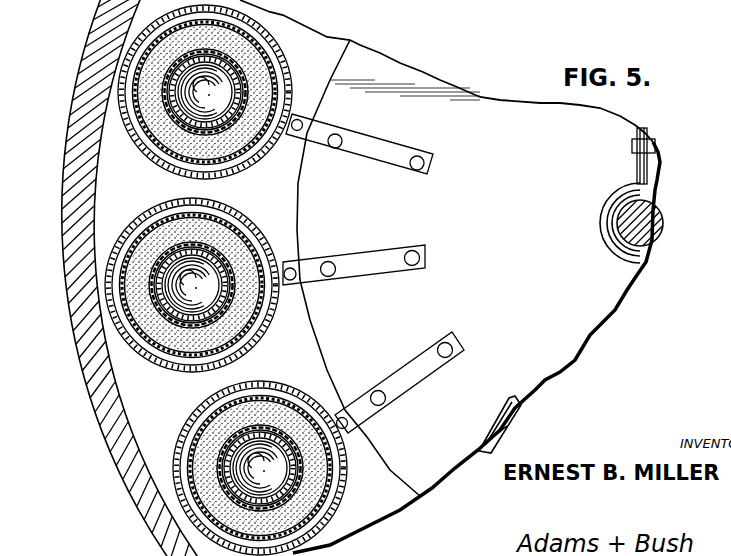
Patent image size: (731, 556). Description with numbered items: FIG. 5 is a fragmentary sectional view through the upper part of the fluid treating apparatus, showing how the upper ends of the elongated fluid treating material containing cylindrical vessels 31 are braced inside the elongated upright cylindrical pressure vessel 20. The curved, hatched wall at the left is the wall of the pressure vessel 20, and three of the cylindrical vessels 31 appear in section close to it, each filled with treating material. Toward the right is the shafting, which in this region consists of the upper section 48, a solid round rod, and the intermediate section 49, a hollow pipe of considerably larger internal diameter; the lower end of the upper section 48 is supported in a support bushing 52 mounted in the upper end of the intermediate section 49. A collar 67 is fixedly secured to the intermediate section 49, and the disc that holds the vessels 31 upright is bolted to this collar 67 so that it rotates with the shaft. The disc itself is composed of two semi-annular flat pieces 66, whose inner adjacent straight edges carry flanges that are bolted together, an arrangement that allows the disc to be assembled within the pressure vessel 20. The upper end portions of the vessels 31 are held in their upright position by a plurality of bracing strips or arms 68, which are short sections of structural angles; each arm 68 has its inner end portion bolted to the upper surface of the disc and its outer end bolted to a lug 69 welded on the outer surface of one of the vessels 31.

The pressure vessel 20 is at (72, 337).
The fluid treating material containing cylindrical vessel 31 is at (289, 66).
The upper section 48 is at (650, 242).
The intermediate section 49 is at (655, 184).
The support bushing 52 is at (650, 192).
The semi-annular flat piece 66 is at (522, 158).
The collar 67 is at (608, 204).
The bracing strip or arm 68 is at (386, 143).
The lug 69 is at (302, 290).